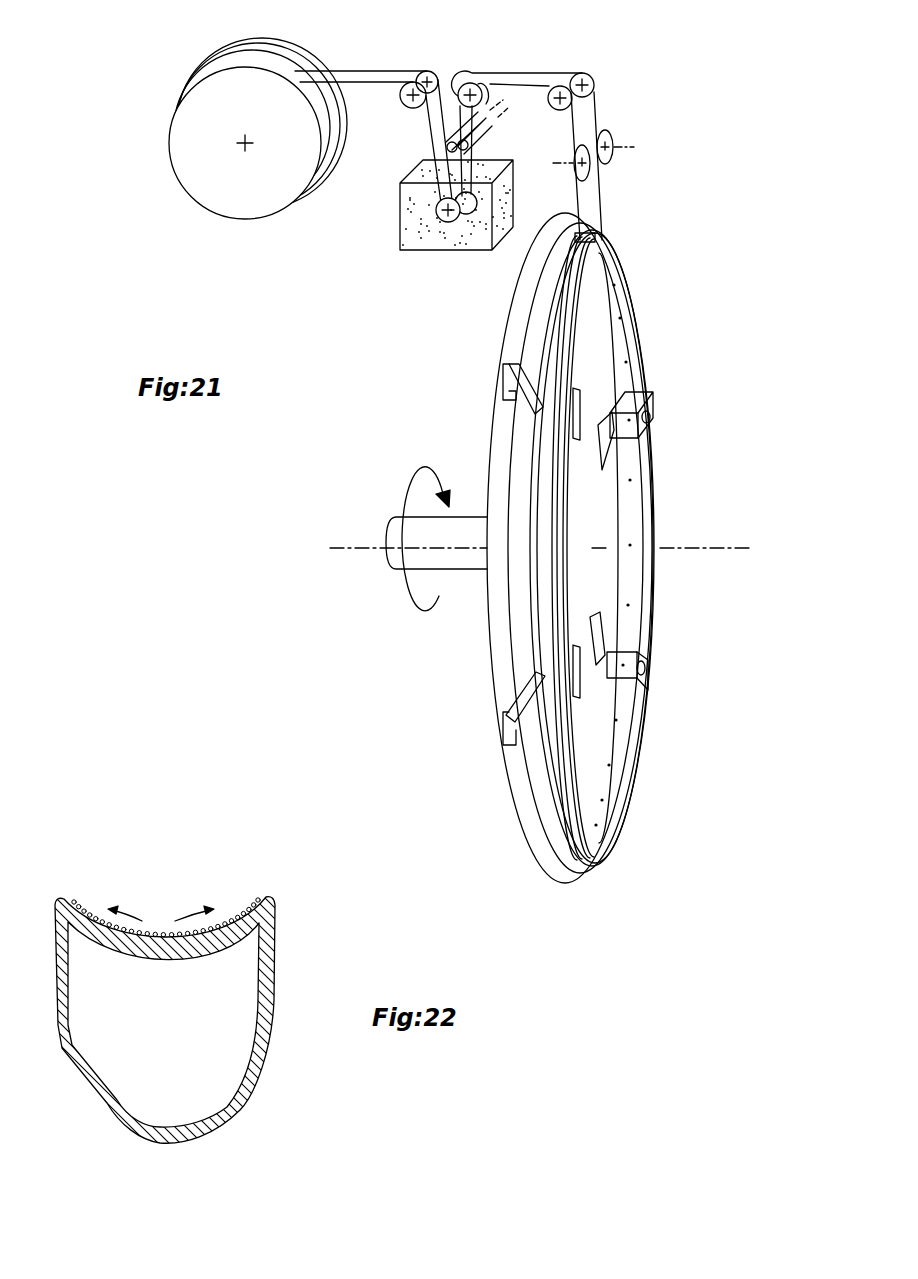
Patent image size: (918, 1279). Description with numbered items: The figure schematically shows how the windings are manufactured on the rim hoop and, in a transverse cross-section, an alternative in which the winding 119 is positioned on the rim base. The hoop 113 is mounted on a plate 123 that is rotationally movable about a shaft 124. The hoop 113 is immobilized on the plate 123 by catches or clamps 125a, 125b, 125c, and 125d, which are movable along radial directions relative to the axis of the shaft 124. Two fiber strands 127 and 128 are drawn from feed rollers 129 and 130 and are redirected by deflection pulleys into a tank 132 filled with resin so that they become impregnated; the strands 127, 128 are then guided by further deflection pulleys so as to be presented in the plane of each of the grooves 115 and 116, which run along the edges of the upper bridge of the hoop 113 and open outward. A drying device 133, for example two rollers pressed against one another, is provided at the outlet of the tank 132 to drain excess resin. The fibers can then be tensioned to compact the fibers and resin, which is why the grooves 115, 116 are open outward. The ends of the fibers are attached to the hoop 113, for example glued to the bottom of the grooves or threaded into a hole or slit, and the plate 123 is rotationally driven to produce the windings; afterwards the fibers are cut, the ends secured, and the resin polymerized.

In FIG. 21, the hoop 113 is at (659, 525).
In FIG. 22, the hoop 113 is at (276, 972).
In FIG. 21, the groove 115 is at (560, 308).
In FIG. 21, the groove 116 is at (580, 334).
In FIG. 22, the winding 119 is at (160, 935).
In FIG. 21, the plate 123 is at (550, 826).
In FIG. 21, the shaft 124 is at (392, 557).
In FIG. 21, the clamp 125a is at (655, 408).
In FIG. 21, the clamp 125b is at (657, 688).
In FIG. 21, the clamp 125c is at (570, 662).
In FIG. 21, the clamp 125d is at (567, 430).
In FIG. 21, the fiber strand 127 is at (373, 86).
In FIG. 21, the fiber strand 128 is at (378, 67).
In FIG. 21, the feed roller 129 is at (267, 205).
In FIG. 21, the feed roller 130 is at (317, 58).
In FIG. 21, the tank 132 is at (410, 250).
In FIG. 21, the drying device 133 is at (488, 128).